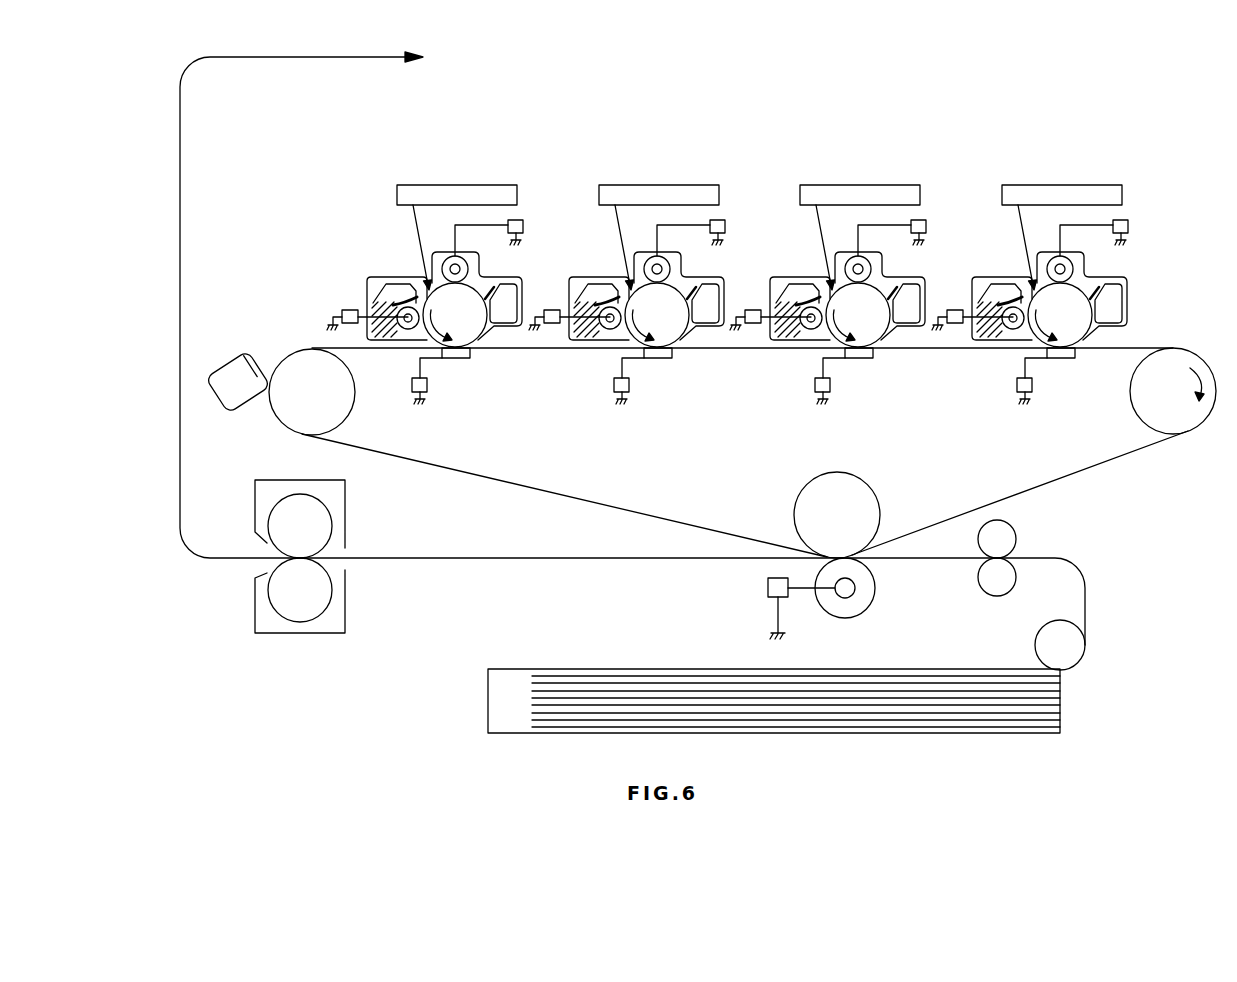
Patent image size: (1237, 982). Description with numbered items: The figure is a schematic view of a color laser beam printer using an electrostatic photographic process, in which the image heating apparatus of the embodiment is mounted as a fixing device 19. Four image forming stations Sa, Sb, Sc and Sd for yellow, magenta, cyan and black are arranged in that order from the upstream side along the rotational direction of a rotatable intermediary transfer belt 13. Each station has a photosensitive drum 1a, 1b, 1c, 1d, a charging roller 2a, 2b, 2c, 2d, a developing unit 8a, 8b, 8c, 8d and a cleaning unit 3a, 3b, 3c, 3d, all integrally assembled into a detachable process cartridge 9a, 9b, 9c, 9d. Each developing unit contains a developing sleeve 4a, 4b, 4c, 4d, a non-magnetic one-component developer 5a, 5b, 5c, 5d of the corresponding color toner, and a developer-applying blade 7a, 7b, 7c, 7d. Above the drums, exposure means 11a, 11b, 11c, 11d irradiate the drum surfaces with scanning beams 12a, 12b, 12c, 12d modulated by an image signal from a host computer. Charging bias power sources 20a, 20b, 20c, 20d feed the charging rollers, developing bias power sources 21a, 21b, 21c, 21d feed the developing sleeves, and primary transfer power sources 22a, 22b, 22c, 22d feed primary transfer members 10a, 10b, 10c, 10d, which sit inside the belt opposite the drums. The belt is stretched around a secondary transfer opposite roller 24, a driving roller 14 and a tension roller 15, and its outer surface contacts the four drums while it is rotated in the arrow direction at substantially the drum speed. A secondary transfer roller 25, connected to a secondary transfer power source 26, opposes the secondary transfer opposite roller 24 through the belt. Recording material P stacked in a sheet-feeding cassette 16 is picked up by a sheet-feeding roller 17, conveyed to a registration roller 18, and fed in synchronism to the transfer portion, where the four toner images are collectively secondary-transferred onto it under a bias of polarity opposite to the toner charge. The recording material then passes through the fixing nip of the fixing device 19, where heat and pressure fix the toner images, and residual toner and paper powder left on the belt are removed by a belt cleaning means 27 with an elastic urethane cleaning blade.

The photosensitive drum 1a is at (455, 315).
The photosensitive drum 1b is at (657, 315).
The photosensitive drum 1c is at (858, 315).
The photosensitive drum 1d is at (1060, 315).
The charging roller 2a is at (448, 262).
The charging roller 2b is at (669, 248).
The charging roller 2c is at (870, 248).
The charging roller 2d is at (1072, 248).
The cleaning unit 3a is at (505, 287).
The cleaning unit 3b is at (679, 295).
The cleaning unit 3c is at (880, 295).
The cleaning unit 3d is at (1082, 295).
The developing sleeve 4a is at (402, 335).
The developing sleeve 4b is at (607, 342).
The developing sleeve 4c is at (808, 342).
The developing sleeve 4d is at (1010, 342).
The non-magnetic one-component developer 5a is at (377, 338).
The non-magnetic one-component developer 5b is at (581, 343).
The non-magnetic one-component developer 5c is at (782, 343).
The non-magnetic one-component developer 5d is at (984, 343).
The developer-applying blade 7a is at (400, 300).
The developer-applying blade 7b is at (608, 278).
The developer-applying blade 7c is at (808, 278).
The developer-applying blade 7d is at (1011, 278).
The developing unit 8a is at (375, 282).
The developing unit 8b is at (584, 294).
The developing unit 8c is at (785, 294).
The developing unit 8d is at (987, 294).
The process cartridge 9a is at (387, 279).
The process cartridge 9b is at (591, 263).
The process cartridge 9c is at (792, 263).
The process cartridge 9d is at (994, 263).
The primary transfer member 10a is at (470, 358).
The primary transfer member 10b is at (675, 371).
The primary transfer member 10c is at (875, 371).
The primary transfer member 10d is at (1078, 371).
The exposure means 11a is at (452, 185).
The exposure means 11b is at (659, 160).
The exposure means 11c is at (860, 160).
The exposure means 11d is at (1062, 160).
The scanning beam 12a is at (418, 236).
The scanning beam 12b is at (594, 242).
The scanning beam 12c is at (795, 242).
The scanning beam 12d is at (997, 242).
The charging bias power source 20a is at (523, 223).
The charging bias power source 20b is at (739, 196).
The charging bias power source 20c is at (939, 196).
The charging bias power source 20d is at (1142, 196).
The developing bias power source 21a is at (349, 310).
The developing bias power source 21b is at (566, 304).
The developing bias power source 21c is at (767, 304).
The developing bias power source 21d is at (969, 304).
The primary transfer power source 22a is at (410, 388).
The primary transfer power source 22b is at (608, 390).
The primary transfer power source 22c is at (809, 390).
The primary transfer power source 22d is at (1011, 390).
The intermediary transfer belt 13 is at (682, 518).
The driving roller 14 is at (1207, 425).
The tension roller 15 is at (277, 418).
The sheet-feeding cassette 16 is at (495, 713).
The sheet-feeding roller 17 is at (1085, 652).
The registration roller 18 is at (1015, 533).
The fixing device 19 is at (346, 607).
The secondary transfer opposite roller 24 is at (858, 490).
The secondary transfer roller 25 is at (877, 597).
The secondary transfer power source 26 is at (765, 590).
The belt cleaning means 27 is at (238, 352).
The recording material P is at (605, 673).
The first image forming station Sa is at (478, 167).
The second image forming station Sb is at (680, 167).
The third image forming station Sc is at (881, 167).
The fourth image forming station Sd is at (1083, 167).